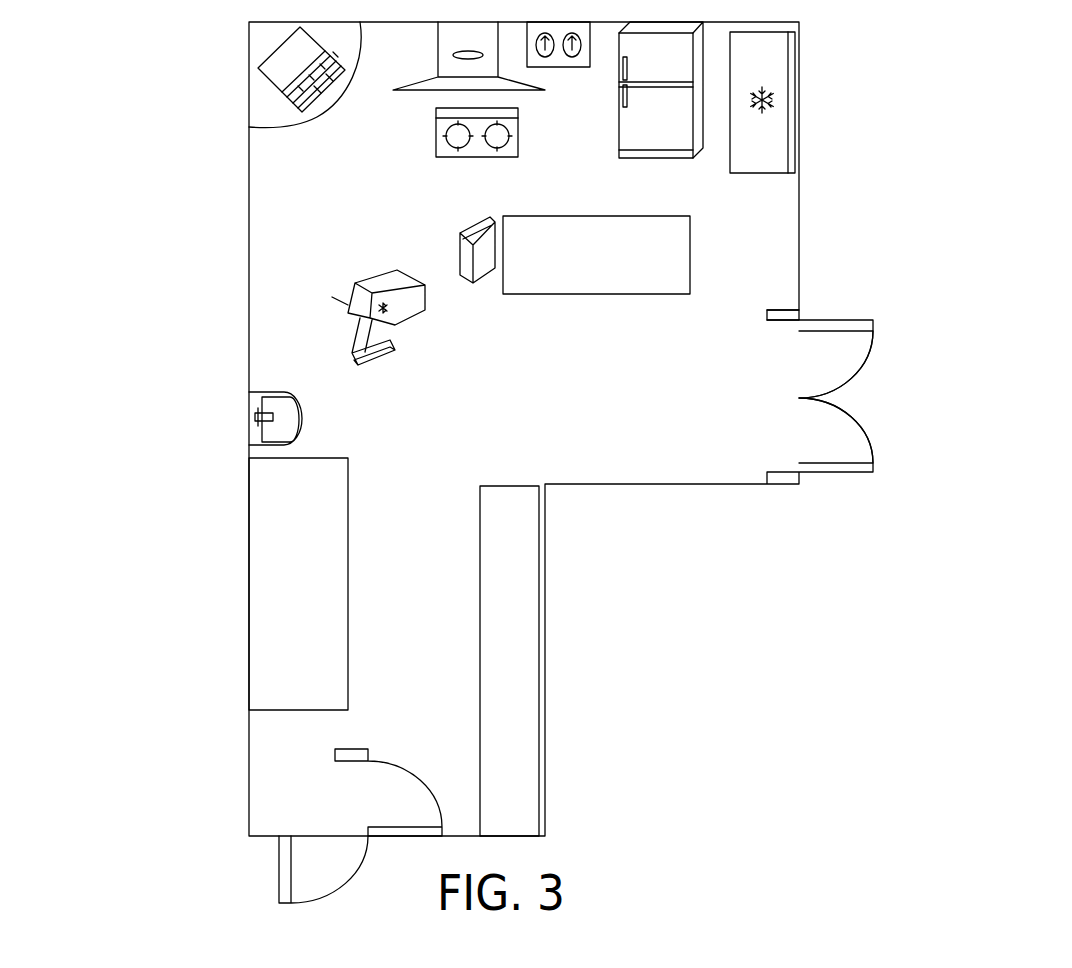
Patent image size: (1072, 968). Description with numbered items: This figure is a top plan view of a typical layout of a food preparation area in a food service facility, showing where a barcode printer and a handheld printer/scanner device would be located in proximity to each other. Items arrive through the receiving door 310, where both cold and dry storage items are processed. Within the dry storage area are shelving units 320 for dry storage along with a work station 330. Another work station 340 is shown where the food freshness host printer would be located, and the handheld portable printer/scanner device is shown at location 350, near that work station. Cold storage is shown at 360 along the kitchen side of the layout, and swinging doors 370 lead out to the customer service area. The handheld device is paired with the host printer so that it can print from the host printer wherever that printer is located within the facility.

The receiving door 310 is at (853, 418).
The shelving units 320 is at (512, 632).
The work station 330 is at (355, 580).
The work station 340 is at (278, 65).
The handheld portable printer/scanner device location 350 is at (345, 300).
The cold storage 360 is at (703, 192).
The swinging doors 370 is at (432, 792).